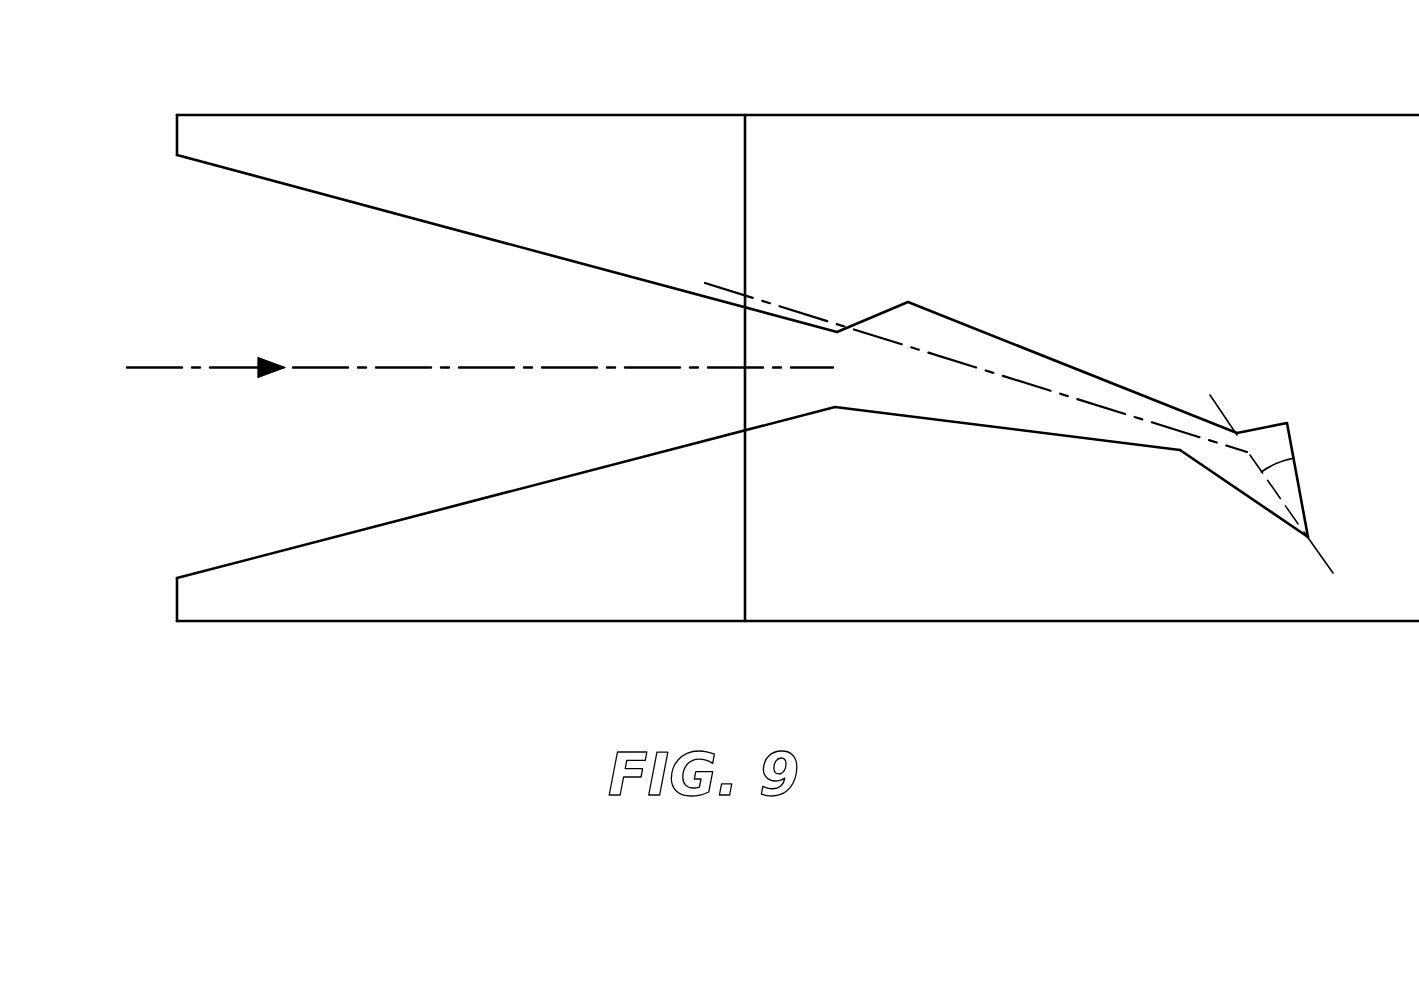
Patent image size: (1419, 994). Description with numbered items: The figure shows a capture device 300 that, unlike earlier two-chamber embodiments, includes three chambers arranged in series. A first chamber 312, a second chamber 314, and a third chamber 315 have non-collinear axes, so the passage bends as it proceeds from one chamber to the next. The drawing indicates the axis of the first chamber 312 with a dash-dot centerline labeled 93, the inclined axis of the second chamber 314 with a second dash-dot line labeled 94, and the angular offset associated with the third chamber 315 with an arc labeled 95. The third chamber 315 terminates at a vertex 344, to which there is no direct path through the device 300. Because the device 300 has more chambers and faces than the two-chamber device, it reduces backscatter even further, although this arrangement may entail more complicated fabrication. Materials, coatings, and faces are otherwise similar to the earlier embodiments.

The device 300 is at (798, 419).
The first chamber 312 is at (526, 288).
The second chamber 314 is at (932, 394).
The third chamber 315 is at (1240, 471).
The vertex 344 is at (1310, 537).
The z axis centerline 93 is at (414, 366).
The inclined axis 94 is at (982, 370).
The angle 95 is at (1300, 442).